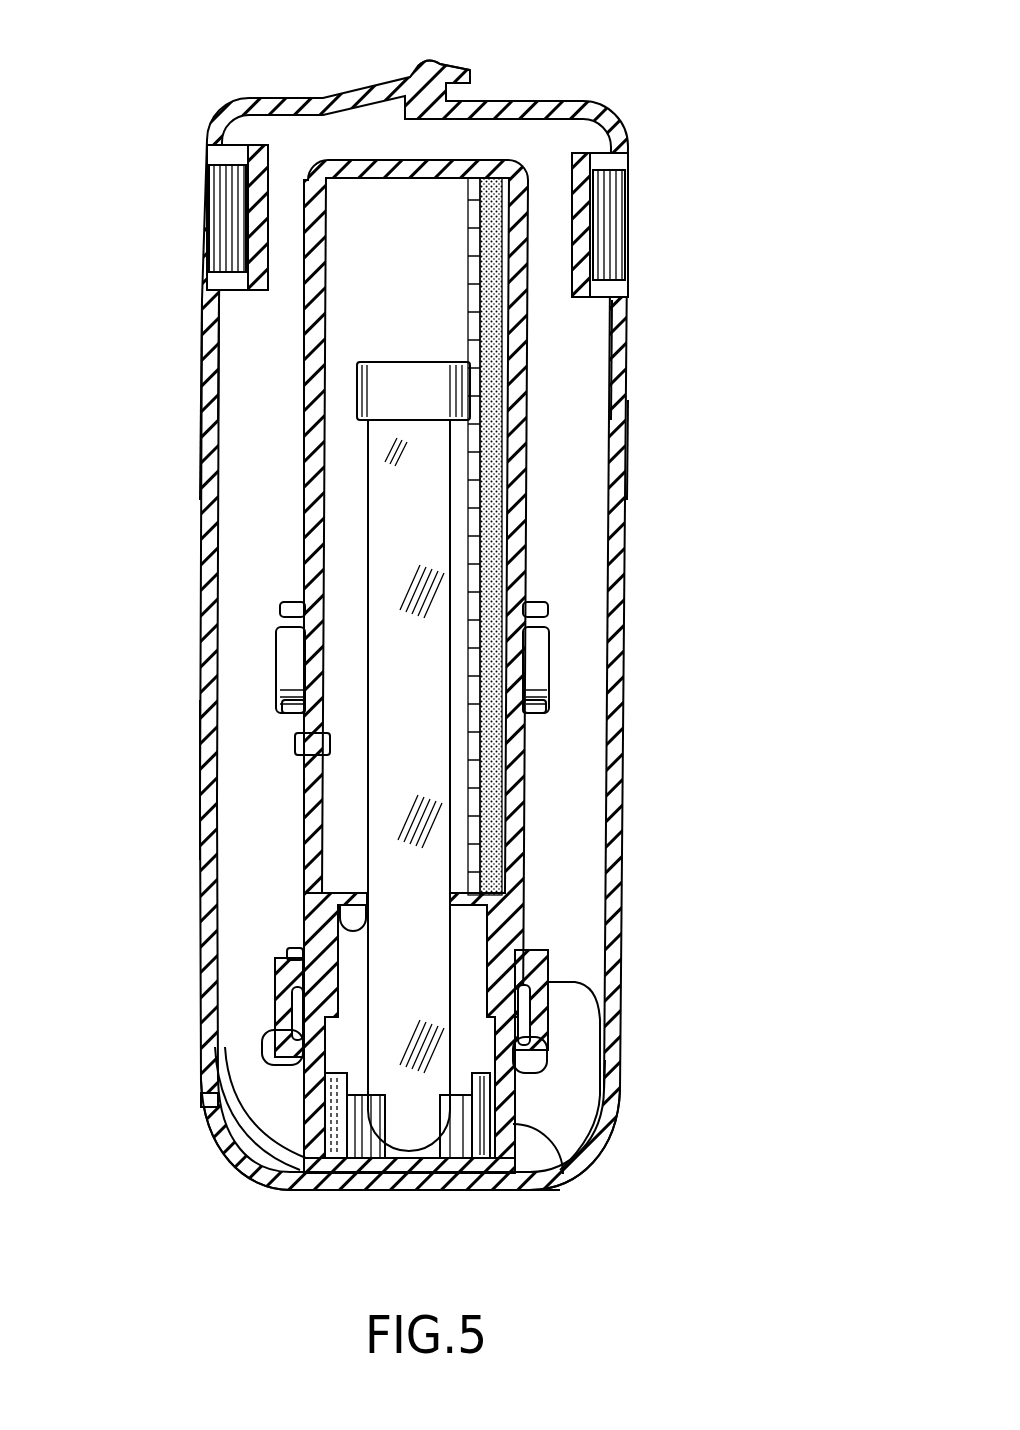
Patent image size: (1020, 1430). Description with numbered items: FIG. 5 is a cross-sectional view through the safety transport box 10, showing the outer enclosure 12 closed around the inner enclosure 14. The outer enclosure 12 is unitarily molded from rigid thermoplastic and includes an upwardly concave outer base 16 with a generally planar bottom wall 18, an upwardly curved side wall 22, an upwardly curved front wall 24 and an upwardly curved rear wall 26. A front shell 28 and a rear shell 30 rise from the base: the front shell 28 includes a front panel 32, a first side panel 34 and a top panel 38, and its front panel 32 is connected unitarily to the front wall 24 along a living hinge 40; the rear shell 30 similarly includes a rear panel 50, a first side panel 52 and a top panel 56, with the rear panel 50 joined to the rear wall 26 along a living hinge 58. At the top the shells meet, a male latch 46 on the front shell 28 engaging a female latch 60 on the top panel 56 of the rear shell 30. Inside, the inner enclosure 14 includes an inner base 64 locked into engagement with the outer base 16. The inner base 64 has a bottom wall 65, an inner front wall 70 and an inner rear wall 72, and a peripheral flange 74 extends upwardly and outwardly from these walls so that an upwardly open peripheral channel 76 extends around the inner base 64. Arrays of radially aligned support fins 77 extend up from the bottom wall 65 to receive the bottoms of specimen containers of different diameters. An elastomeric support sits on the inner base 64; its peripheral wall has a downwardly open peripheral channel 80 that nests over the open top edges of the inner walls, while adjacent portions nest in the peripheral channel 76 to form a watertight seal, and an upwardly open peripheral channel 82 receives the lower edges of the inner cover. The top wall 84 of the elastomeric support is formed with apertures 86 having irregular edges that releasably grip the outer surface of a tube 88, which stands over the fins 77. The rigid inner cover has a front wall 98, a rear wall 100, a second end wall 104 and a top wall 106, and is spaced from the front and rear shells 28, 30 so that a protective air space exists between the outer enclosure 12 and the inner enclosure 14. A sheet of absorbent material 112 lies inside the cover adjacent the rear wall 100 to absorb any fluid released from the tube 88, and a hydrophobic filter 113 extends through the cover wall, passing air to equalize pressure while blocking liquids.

The safety transport box 10 is at (148, 192).
The outer enclosure 12 is at (198, 552).
The inner enclosure 14 is at (302, 493).
The outer base 16 is at (226, 1168).
The bottom wall 18 is at (427, 1190).
The side wall 22 is at (588, 1092).
The front wall 24 is at (600, 1150).
The rear wall 26 is at (216, 1140).
The front shell 28 is at (630, 446).
The rear shell 30 is at (198, 777).
The front panel 32 is at (628, 378).
The first side panel 34 is at (547, 462).
The top panel 38 is at (533, 101).
The living hinge 40 is at (612, 1105).
The male latch 46 is at (420, 64).
The rear panel 50 is at (200, 677).
The first side panel 52 is at (237, 454).
The top panel 56 is at (288, 97).
The living hinge 58 is at (201, 1100).
The female latch 60 is at (457, 66).
The inner base 64 is at (566, 1178).
The bottom wall 65 is at (345, 1170).
The inner front wall 70 is at (520, 1170).
The inner rear wall 72 is at (277, 1190).
The peripheral flange 74 is at (285, 975).
The upwardly open peripheral channel 76 is at (292, 1045).
The support fins 77 is at (370, 1160).
The downwardly open peripheral channel 80 is at (275, 1010).
The upwardly open peripheral channel 82 is at (305, 935).
The top wall 84 is at (345, 905).
The apertures 86 is at (365, 893).
The tube 88 is at (382, 717).
The front wall 98 is at (523, 795).
The rear wall 100 is at (305, 262).
The second end wall 104 is at (360, 287).
The top wall 106 is at (364, 160).
The absorbent material 112 is at (505, 180).
The hydrophobic filters 113 is at (300, 755).